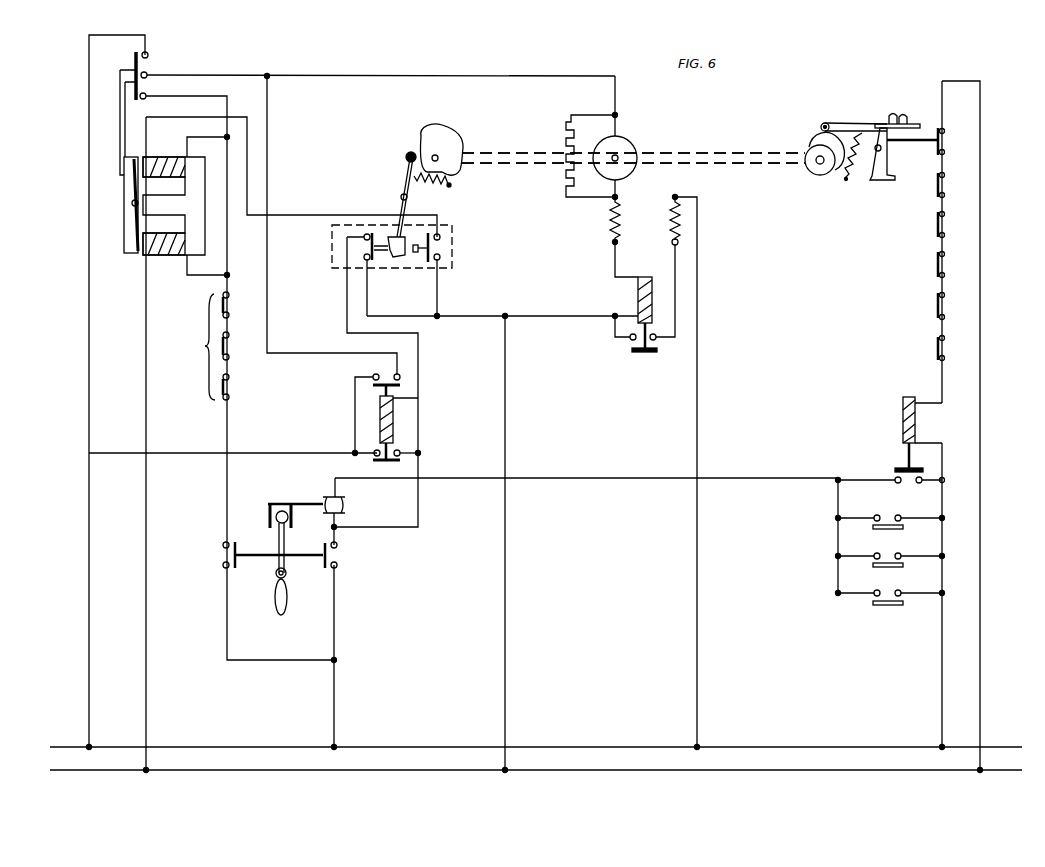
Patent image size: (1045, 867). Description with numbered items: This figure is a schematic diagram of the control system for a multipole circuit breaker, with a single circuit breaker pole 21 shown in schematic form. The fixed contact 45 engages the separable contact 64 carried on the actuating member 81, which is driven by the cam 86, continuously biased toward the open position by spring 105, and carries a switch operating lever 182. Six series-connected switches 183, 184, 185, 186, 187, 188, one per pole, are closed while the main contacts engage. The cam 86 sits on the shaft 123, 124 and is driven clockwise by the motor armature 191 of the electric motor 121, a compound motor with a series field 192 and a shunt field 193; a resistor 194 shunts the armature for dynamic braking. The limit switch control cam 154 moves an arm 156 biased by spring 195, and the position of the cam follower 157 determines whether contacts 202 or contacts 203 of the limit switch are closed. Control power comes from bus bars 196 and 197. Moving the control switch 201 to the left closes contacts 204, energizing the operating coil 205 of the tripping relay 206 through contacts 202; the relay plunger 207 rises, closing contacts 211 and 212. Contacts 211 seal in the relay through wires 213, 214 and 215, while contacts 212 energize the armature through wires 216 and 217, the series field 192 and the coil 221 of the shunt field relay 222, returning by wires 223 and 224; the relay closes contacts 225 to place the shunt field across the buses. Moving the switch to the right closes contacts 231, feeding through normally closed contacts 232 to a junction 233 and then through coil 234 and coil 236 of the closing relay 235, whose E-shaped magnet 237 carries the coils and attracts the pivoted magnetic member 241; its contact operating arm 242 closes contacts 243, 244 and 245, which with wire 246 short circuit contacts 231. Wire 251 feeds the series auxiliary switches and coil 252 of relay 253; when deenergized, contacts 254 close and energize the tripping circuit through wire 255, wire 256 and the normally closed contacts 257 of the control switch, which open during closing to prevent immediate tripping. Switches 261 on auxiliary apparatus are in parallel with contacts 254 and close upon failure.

The circuit breaker pole 21 is at (845, 200).
The fixed contact 45 is at (900, 118).
The separable contact 64 is at (878, 120).
The actuating member 81 is at (840, 128).
The cam 86 is at (832, 174).
The spring 105 is at (855, 176).
The electric motor 121 is at (562, 190).
The shaft 123 is at (718, 166).
The shaft 124 is at (633, 158).
The limit switch control cam 154 is at (440, 120).
The arm 156 is at (402, 178).
The cam follower 157 is at (410, 152).
The switch operating lever 182 is at (896, 143).
The switch 183 is at (946, 146).
The switch 184 is at (946, 188).
The switch 185 is at (946, 229).
The switch 186 is at (946, 270).
The switch 187 is at (946, 313).
The switch 188 is at (946, 353).
The motor armature 191 is at (630, 173).
The series field 192 is at (610, 224).
The shunt field 193 is at (670, 226).
The resistor 194 is at (566, 184).
The spring 195 is at (434, 186).
The control bus bar 196 is at (66, 747).
The control bus bar 197 is at (62, 770).
The control switch 201 is at (290, 640).
The limit switch contacts 202 is at (366, 246).
The limit switch contacts 203 is at (440, 248).
The contacts 204 is at (338, 557).
The operating coil 205 is at (396, 424).
The tripping relay 206 is at (395, 391).
The relay plunger 207 is at (396, 436).
The contacts 211 is at (400, 450).
The contacts 212 is at (374, 376).
The wire 213 is at (418, 510).
The wire 214 is at (310, 446).
The wire 215 is at (89, 603).
The wire 216 is at (310, 358).
The wire 217 is at (446, 72).
The coil 221 is at (636, 293).
The shunt field relay 222 is at (610, 343).
The wire 223 is at (530, 318).
The wire 224 is at (505, 565).
The contacts 225 is at (655, 341).
The contacts 231 is at (232, 555).
The normally closed contacts 232 is at (204, 346).
The junction 233 is at (229, 274).
The coil 234 is at (163, 257).
The closing relay 235 is at (113, 190).
The coil 236 is at (163, 157).
The E-shaped magnet 237 is at (174, 206).
The magnetic member 241 is at (124, 246).
The contact operating arm 242 is at (120, 118).
The contacts 243 is at (148, 53).
The contacts 244 is at (147, 74).
The contacts 245 is at (146, 95).
The wire 246 is at (89, 297).
The wire 251 is at (982, 604).
The coil 252 is at (902, 410).
The relay 253 is at (893, 436).
The contacts 254 is at (893, 477).
The wire 255 is at (942, 645).
The wire 256 is at (672, 480).
The normally closed contacts 257 is at (346, 503).
The switches 261 is at (830, 572).